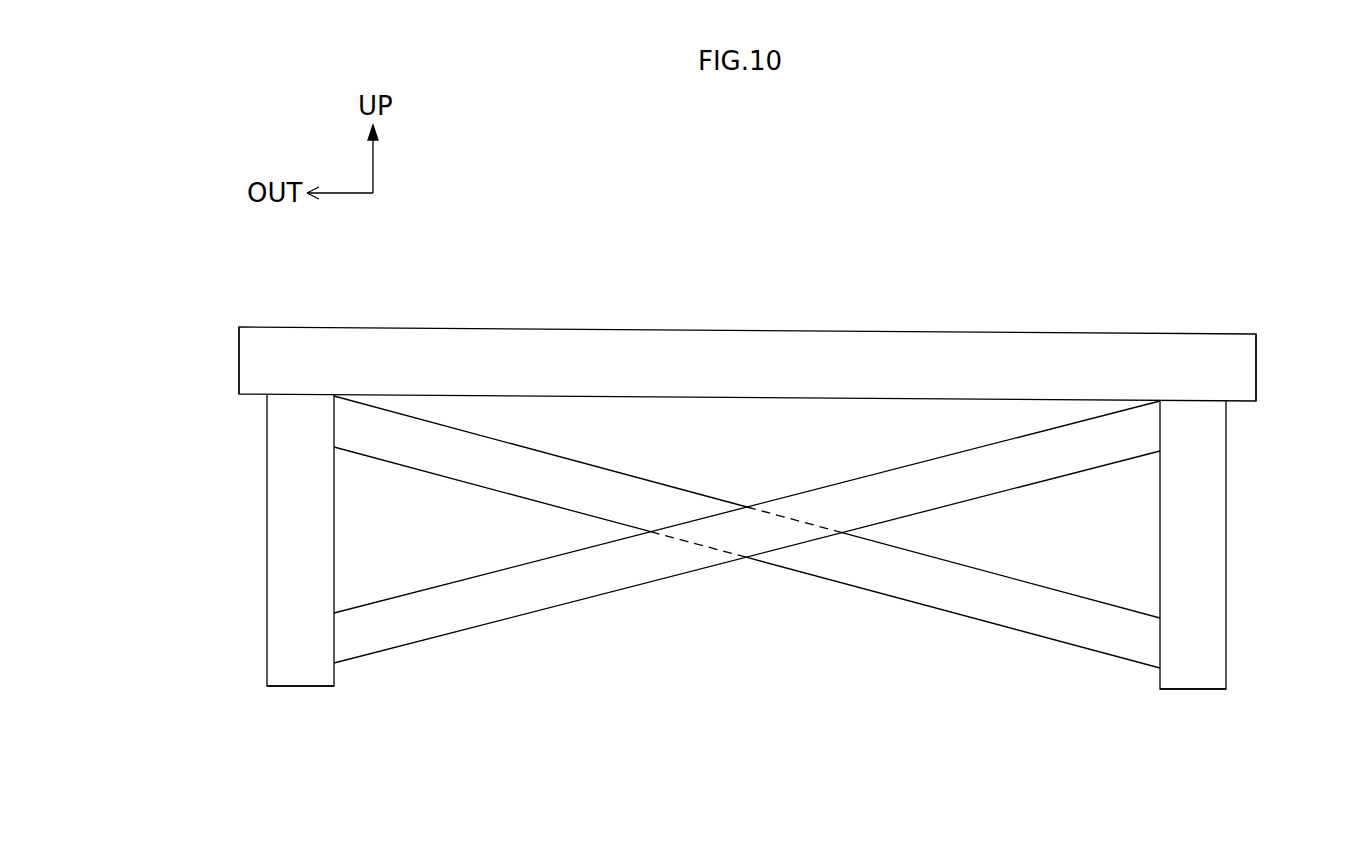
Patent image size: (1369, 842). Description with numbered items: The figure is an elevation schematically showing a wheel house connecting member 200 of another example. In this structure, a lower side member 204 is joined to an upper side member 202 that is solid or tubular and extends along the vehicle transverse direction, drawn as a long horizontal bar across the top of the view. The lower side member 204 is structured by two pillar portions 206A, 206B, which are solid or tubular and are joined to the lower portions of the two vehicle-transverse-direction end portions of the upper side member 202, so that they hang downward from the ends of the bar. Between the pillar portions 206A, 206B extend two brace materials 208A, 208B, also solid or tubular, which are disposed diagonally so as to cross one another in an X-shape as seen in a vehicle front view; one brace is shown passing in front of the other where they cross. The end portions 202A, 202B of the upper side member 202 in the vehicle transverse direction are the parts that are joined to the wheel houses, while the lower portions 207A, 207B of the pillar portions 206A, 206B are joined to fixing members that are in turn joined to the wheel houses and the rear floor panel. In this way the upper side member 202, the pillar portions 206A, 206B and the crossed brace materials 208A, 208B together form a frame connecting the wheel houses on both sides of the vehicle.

The wheel house connecting member 200 is at (876, 248).
The upper side member 202 is at (952, 352).
The end portion of upper side member 202A is at (250, 358).
The end portion of upper side member 202B is at (1243, 368).
The lower side member 204 is at (612, 690).
The pillar portion 206A is at (287, 533).
The pillar portion 206B is at (1212, 557).
The lower portion of pillar portion 207A is at (300, 670).
The lower portion of pillar portion 207B is at (1193, 680).
The brace material 208A is at (672, 557).
The brace material 208B is at (905, 583).